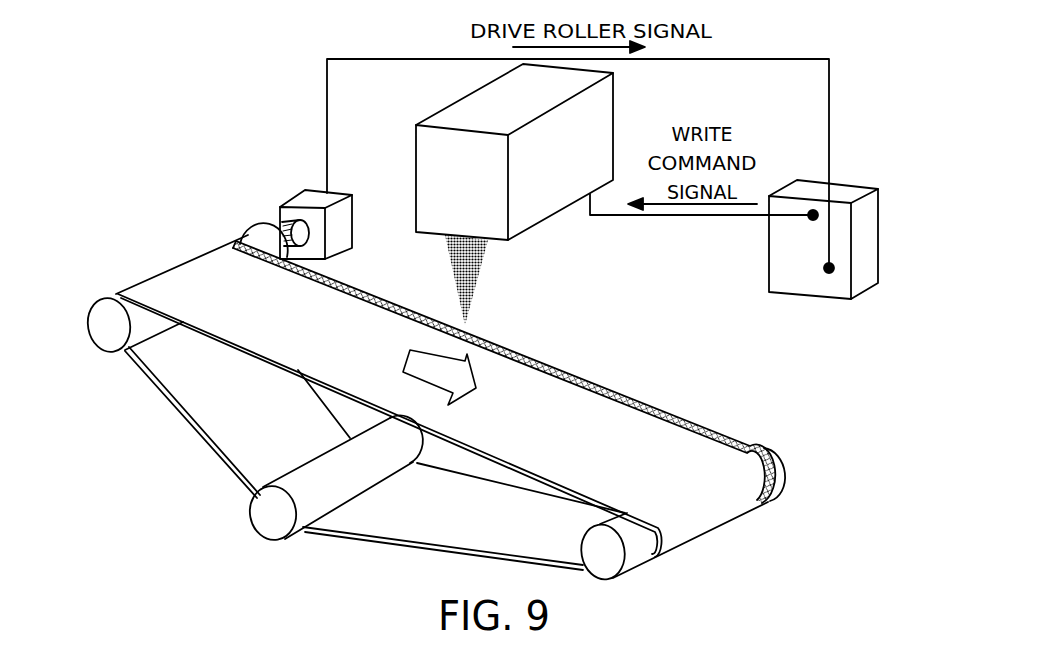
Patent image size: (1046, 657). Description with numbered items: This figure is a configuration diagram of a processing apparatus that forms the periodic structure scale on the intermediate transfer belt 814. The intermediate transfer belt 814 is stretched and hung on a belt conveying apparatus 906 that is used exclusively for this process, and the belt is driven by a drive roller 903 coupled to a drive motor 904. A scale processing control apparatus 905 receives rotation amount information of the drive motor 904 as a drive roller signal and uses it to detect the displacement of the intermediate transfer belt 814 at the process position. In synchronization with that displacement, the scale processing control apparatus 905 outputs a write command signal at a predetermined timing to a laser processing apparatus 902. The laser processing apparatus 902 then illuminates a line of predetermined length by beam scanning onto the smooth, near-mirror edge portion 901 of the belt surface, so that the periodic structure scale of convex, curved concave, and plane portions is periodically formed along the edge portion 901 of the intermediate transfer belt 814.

The edge portion 901 is at (725, 443).
The laser processing apparatus 902 is at (593, 128).
The drive roller 903 is at (112, 336).
The drive motor 904 is at (281, 208).
The scale processing control apparatus 905 is at (812, 298).
The belt conveying apparatus 906 is at (350, 479).
The intermediate transfer belt 814 is at (440, 527).